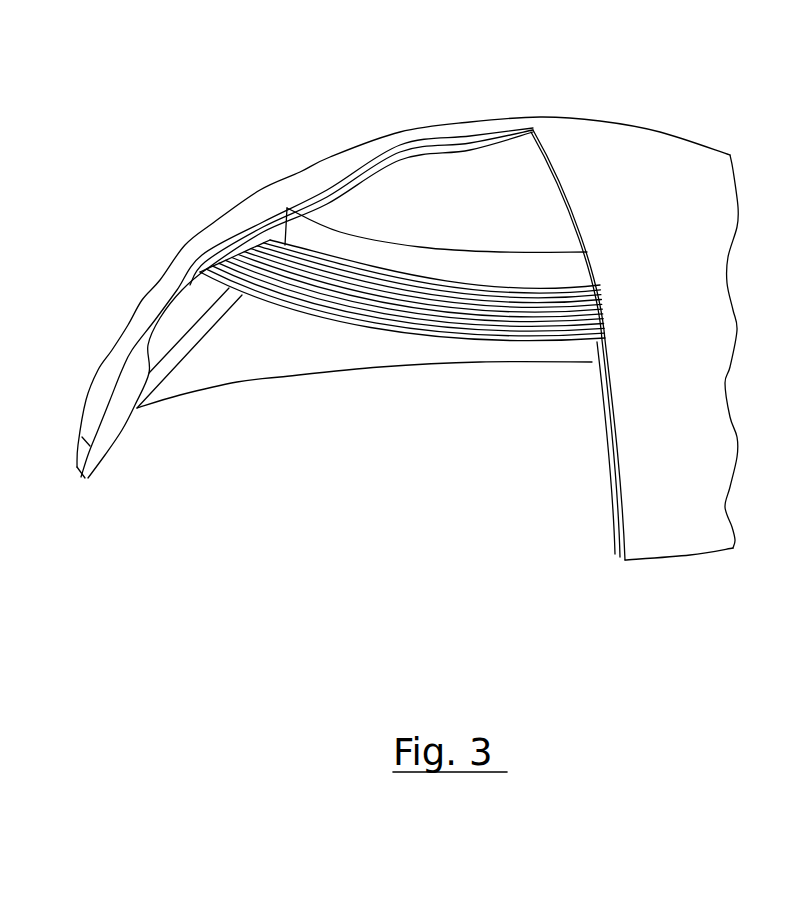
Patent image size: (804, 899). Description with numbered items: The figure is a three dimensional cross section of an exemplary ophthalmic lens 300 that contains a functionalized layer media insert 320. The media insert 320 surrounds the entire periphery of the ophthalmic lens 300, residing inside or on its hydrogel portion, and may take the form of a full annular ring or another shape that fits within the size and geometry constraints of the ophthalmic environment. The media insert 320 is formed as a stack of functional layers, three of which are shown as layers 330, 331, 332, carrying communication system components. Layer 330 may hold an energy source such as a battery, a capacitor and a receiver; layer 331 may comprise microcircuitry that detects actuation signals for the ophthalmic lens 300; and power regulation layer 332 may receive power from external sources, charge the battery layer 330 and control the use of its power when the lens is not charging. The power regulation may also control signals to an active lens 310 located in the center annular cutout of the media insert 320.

The ophthalmic lens 300 is at (365, 88).
The active lens 310 is at (407, 195).
The functionalized layer media insert 320 is at (212, 312).
The layer 330 is at (441, 287).
The layer 331 is at (481, 305).
The power regulation layer 332 is at (528, 340).